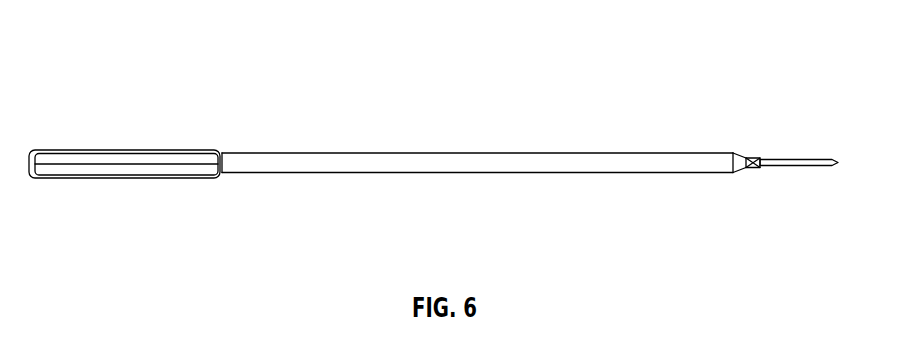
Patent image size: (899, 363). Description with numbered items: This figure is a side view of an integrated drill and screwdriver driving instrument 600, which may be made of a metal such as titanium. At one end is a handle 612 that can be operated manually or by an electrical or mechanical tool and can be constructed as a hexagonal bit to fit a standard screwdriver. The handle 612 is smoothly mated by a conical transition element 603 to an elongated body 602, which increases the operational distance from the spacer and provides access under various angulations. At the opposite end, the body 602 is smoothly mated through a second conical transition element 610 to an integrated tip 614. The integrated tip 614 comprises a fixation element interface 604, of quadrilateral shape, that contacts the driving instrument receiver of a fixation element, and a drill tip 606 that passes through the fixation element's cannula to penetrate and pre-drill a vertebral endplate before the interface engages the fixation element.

The integrated drill and screwdriver driving instrument 600 is at (232, 59).
The handle 612 is at (136, 148).
The conical transition element 603 is at (218, 152).
The body 602 is at (350, 151).
The integrated tip 614 is at (761, 122).
The conical transition element 610 is at (733, 153).
The fixation element interface 604 is at (746, 168).
The drill tip 606 is at (792, 163).